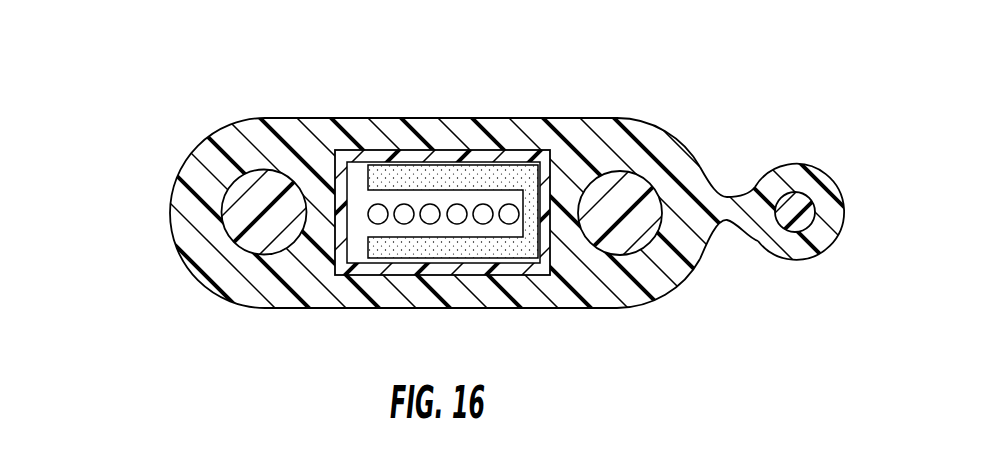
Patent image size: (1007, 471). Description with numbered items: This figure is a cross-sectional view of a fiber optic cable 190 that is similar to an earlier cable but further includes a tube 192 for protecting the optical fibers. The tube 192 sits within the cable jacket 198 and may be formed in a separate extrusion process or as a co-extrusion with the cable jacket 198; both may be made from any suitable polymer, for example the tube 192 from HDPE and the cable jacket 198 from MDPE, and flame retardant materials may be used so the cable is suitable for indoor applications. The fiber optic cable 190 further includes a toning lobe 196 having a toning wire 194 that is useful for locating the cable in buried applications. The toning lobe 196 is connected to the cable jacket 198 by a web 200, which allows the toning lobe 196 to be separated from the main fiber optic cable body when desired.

The fiber optic cable 190 is at (503, 235).
The tube 192 is at (443, 150).
The toning wire 194 is at (797, 193).
The toning lobe 196 is at (837, 218).
The cable jacket 198 is at (200, 258).
The web 200 is at (731, 222).